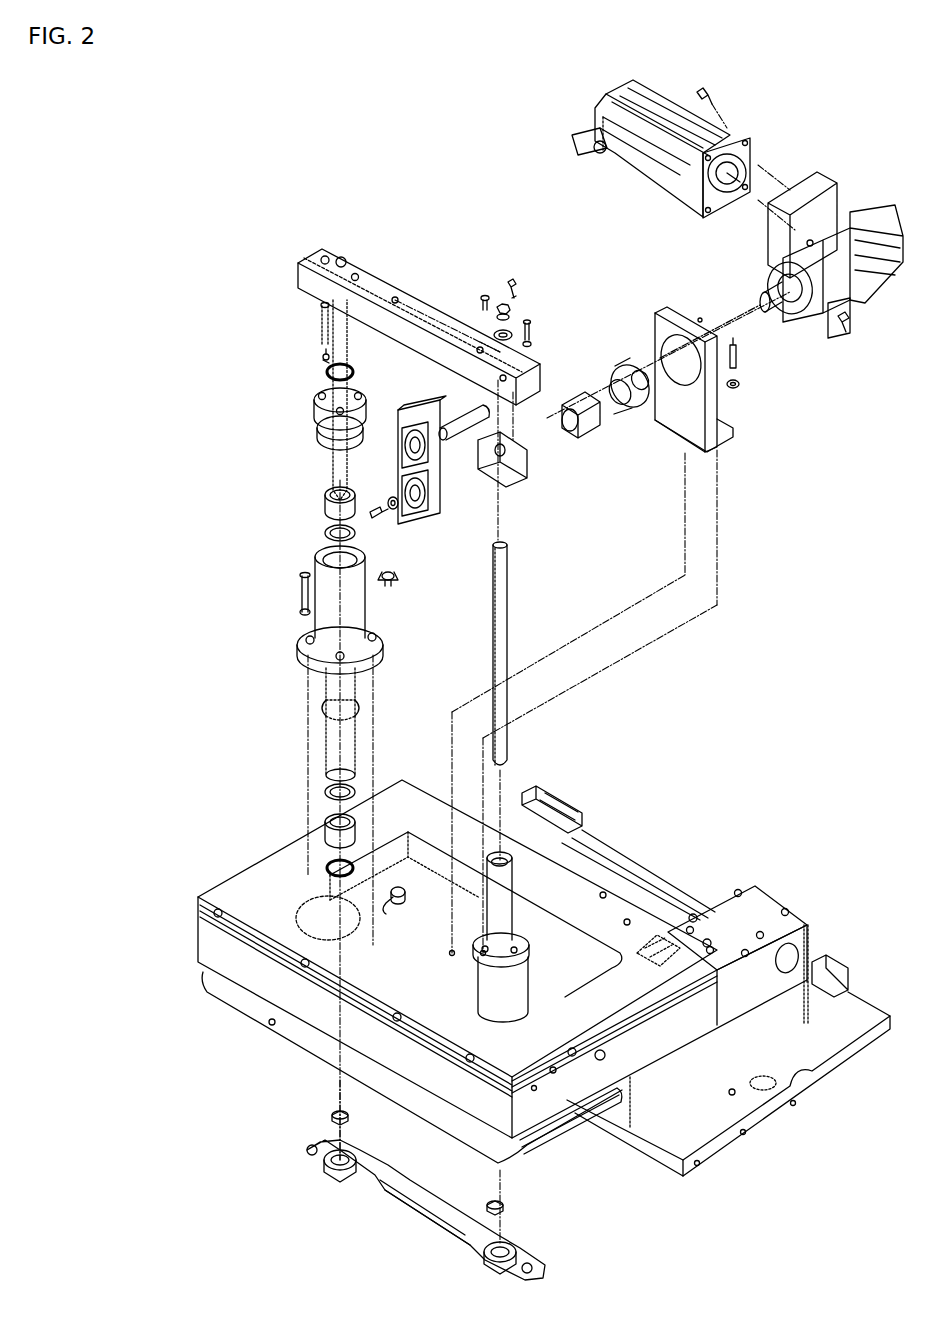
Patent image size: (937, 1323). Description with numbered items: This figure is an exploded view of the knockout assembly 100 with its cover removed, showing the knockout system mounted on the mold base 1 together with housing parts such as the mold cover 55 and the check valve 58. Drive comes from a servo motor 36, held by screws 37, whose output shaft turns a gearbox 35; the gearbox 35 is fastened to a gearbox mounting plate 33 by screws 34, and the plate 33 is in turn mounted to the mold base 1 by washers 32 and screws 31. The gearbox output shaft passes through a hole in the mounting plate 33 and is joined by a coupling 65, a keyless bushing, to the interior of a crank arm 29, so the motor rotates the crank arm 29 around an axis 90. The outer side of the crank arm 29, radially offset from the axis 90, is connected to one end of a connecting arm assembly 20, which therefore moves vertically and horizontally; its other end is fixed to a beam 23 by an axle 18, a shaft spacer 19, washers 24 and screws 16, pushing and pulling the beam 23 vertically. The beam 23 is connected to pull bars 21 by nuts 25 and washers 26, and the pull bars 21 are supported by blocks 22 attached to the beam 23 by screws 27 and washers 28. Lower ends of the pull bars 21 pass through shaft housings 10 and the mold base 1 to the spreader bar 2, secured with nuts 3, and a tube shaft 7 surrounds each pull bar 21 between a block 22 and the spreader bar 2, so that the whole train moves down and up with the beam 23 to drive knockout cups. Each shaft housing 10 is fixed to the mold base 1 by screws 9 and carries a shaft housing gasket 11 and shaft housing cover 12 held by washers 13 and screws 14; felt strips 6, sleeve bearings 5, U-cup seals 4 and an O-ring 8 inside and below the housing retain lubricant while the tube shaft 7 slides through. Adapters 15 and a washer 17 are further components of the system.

The knockout assembly 100 is at (195, 72).
The mold base 1 is at (690, 1184).
The spreader bar 2 is at (402, 1222).
The nuts 3 is at (349, 1118).
The U-cup seals 4 is at (328, 372).
The sleeve bearings 5 is at (325, 496).
The felt strips 6 is at (325, 533).
The tube shafts 7 is at (513, 905).
The O-rings 8 is at (326, 700).
The screws 9 is at (300, 590).
The shaft housings 10 is at (378, 600).
The shaft housing gaskets 11 is at (318, 431).
The shaft housing covers 12 is at (314, 404).
The washers 13 is at (322, 358).
The screws 14 is at (322, 307).
The adapters 15 is at (396, 577).
The screws 16 is at (514, 278).
The washer 17 is at (390, 500).
The axle 18 is at (452, 422).
The shaft spacer 19 is at (470, 404).
The connecting arm assembly 20 is at (438, 490).
The pull bars 21 is at (334, 310).
The blocks 22 is at (524, 482).
The beam 23 is at (378, 276).
The washers 24 is at (484, 292).
The nuts 25 is at (508, 306).
The washers 26 is at (512, 332).
The screws 27 is at (531, 322).
The washers 28 is at (532, 344).
The crank arm 29 is at (582, 438).
The screws 31 is at (740, 354).
The washers 32 is at (740, 386).
The gearbox mounting plate 33 is at (722, 450).
The screws 34 is at (850, 328).
The gearbox 35 is at (883, 205).
The servo motor 36 is at (592, 101).
The screws 37 is at (710, 90).
The mold cover 55 is at (764, 890).
The check valve 58 is at (578, 805).
The coupling 65 is at (630, 362).
The axis 90 is at (733, 323).